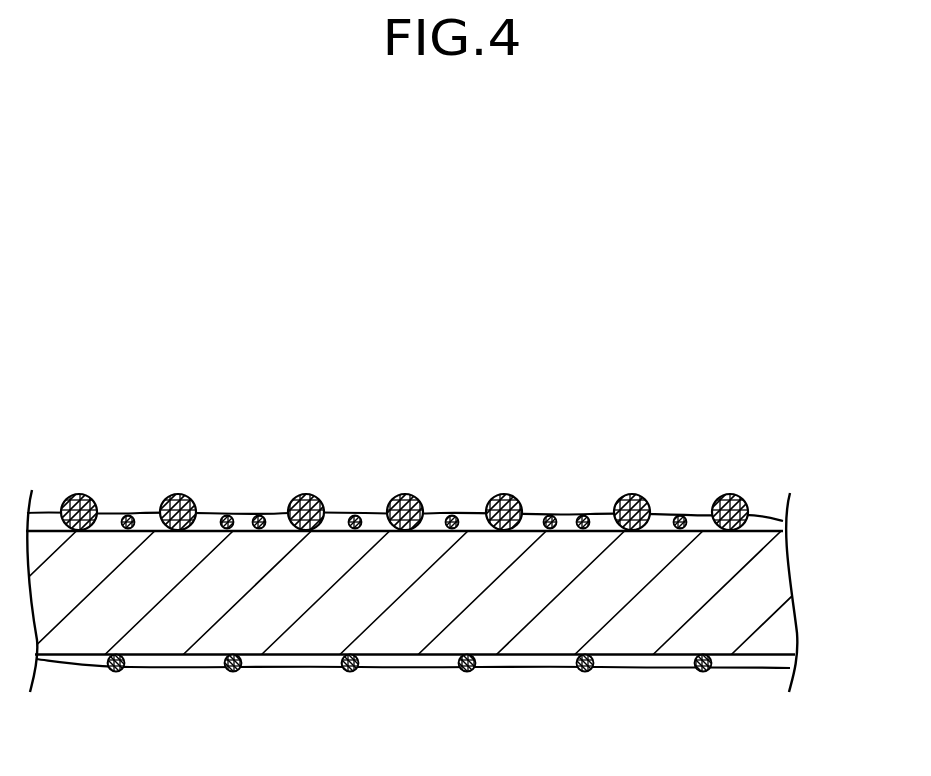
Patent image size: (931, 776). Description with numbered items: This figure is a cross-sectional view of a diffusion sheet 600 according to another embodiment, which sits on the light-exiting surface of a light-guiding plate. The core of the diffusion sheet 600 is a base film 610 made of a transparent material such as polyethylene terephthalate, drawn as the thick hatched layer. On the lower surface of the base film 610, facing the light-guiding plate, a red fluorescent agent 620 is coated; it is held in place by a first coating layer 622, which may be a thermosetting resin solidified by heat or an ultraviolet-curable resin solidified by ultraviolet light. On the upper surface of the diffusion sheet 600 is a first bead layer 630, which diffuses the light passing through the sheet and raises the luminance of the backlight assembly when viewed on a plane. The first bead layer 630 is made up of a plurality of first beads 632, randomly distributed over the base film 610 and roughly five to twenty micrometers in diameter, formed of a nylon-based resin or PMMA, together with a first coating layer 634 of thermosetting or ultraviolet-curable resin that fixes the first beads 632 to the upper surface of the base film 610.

The diffusion sheet 600 is at (405, 393).
The base film 610 is at (780, 593).
The red fluorescent agent 620 is at (583, 670).
The first coating layer 622 is at (668, 664).
The first bead layer 630 is at (782, 524).
The first beads 632 is at (728, 496).
The first coating layer 634 is at (603, 520).